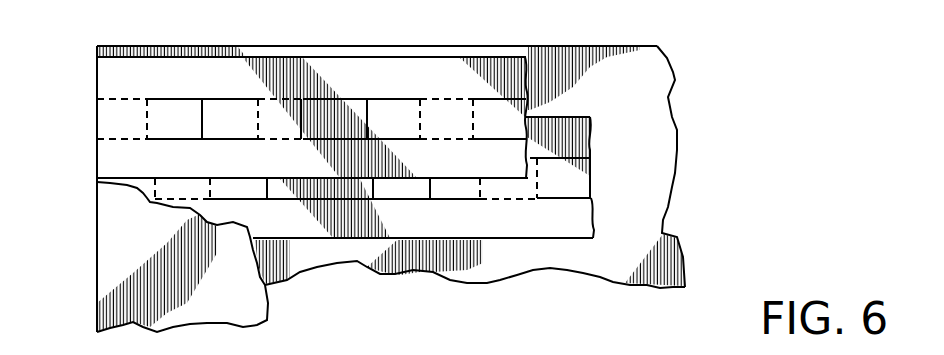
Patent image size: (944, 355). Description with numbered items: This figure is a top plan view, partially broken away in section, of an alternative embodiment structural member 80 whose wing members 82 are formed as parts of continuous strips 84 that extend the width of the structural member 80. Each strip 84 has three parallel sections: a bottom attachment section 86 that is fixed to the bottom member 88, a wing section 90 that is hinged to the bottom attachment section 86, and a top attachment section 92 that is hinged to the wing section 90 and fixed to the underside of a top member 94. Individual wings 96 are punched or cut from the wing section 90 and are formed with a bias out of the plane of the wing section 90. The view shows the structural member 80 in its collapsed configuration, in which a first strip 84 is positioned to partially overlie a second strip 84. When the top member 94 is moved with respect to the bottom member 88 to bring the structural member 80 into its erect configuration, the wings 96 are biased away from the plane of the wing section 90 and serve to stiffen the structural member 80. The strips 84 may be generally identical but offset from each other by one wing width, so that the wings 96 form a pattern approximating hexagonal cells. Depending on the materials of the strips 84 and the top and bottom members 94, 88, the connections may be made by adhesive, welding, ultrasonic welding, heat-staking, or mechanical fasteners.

The structural member 80 is at (722, 156).
The wing members 82 is at (391, 98).
The continuous strips 84 is at (530, 110).
The bottom attachment section 86 is at (98, 78).
The bottom member 88 is at (676, 233).
The wing section 90 is at (100, 120).
The top attachment section 92 is at (98, 160).
The top member 94 is at (268, 297).
The wings 96 is at (163, 98).